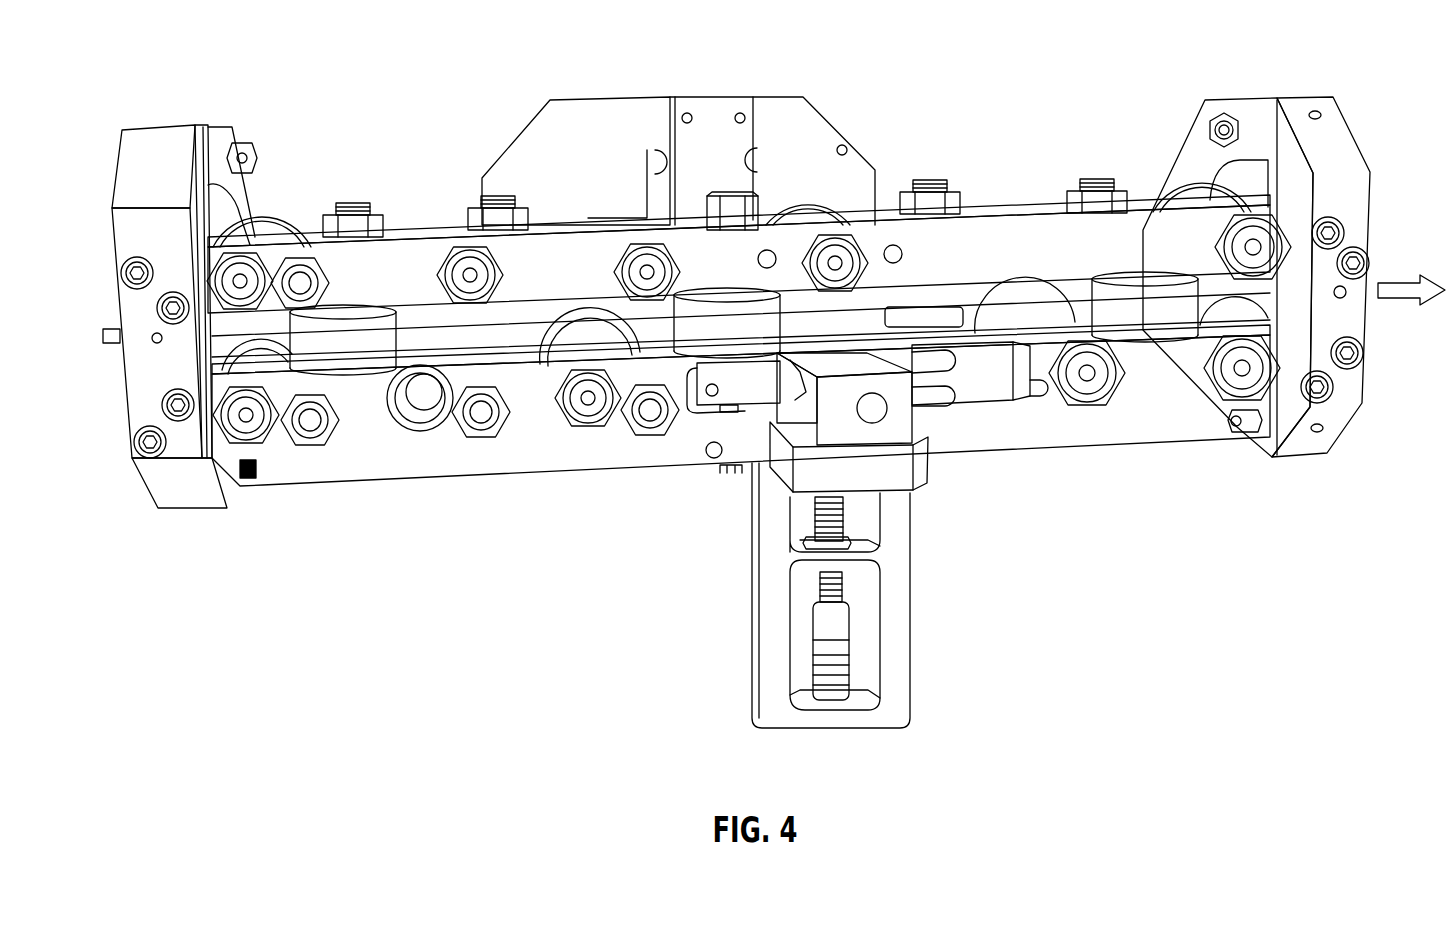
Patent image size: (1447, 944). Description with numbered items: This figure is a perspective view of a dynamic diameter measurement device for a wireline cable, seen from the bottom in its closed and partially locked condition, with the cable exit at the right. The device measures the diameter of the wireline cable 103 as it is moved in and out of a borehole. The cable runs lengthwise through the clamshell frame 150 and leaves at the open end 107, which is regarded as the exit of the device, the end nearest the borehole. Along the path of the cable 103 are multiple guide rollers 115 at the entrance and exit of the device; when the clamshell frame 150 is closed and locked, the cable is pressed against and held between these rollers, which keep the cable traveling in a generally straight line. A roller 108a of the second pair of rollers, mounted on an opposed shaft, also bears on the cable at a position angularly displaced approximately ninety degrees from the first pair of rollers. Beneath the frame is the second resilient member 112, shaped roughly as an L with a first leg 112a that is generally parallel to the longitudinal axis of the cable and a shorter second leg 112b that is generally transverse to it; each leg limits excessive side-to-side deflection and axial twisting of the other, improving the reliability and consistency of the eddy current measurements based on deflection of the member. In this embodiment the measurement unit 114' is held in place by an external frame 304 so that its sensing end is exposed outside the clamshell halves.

The wireline cable 103 is at (115, 330).
The open end 107 is at (1360, 140).
The roller of second pair of rollers 108a is at (800, 190).
The second resilient member 112 is at (840, 365).
The first leg of second resilient member 112a is at (997, 395).
The second leg of second resilient member 112b is at (900, 422).
The measurement unit 114' is at (768, 643).
The guide rollers 115 is at (283, 217).
The clamshell frame 150 is at (1372, 210).
The external frame 304 is at (902, 713).